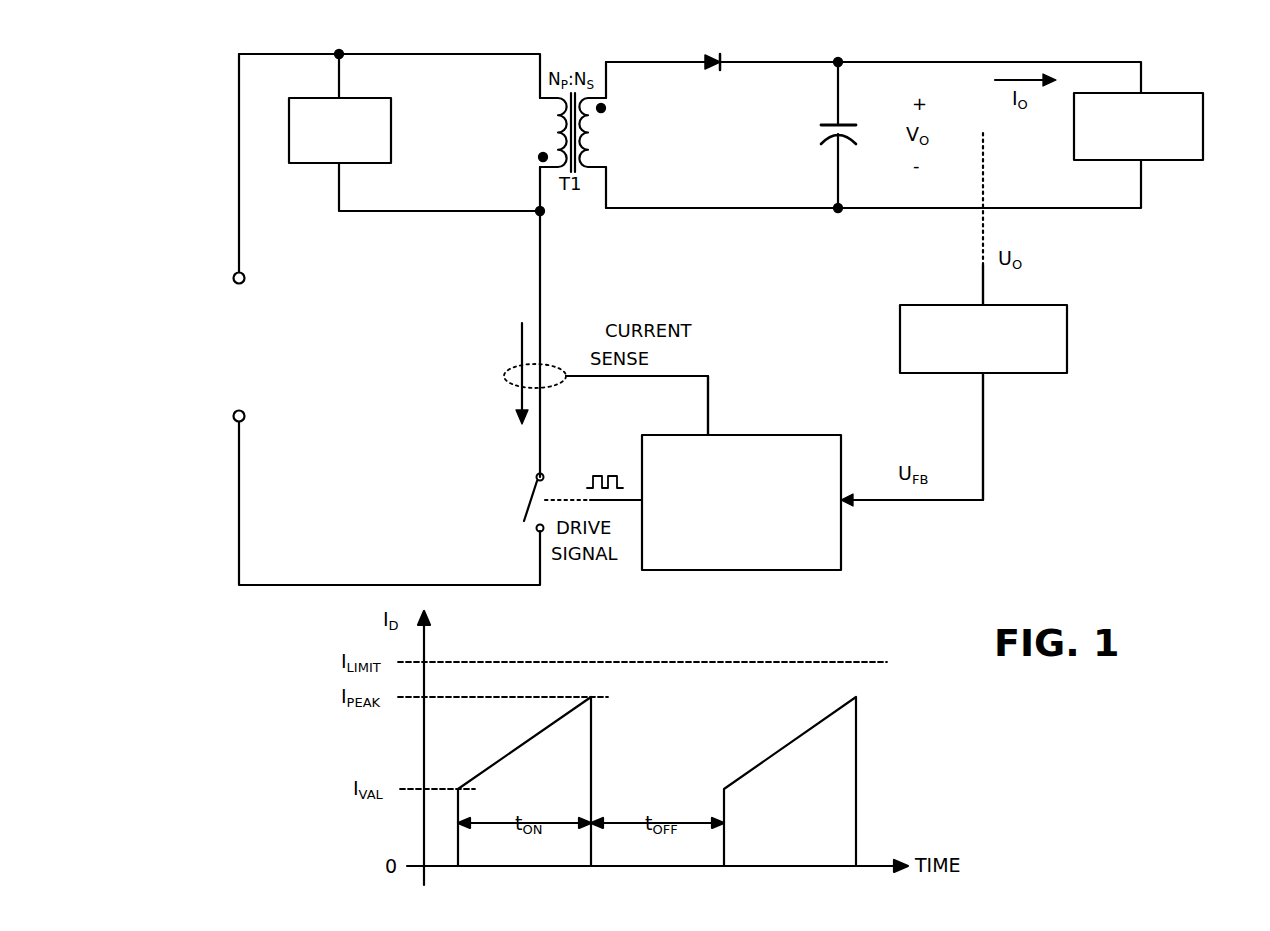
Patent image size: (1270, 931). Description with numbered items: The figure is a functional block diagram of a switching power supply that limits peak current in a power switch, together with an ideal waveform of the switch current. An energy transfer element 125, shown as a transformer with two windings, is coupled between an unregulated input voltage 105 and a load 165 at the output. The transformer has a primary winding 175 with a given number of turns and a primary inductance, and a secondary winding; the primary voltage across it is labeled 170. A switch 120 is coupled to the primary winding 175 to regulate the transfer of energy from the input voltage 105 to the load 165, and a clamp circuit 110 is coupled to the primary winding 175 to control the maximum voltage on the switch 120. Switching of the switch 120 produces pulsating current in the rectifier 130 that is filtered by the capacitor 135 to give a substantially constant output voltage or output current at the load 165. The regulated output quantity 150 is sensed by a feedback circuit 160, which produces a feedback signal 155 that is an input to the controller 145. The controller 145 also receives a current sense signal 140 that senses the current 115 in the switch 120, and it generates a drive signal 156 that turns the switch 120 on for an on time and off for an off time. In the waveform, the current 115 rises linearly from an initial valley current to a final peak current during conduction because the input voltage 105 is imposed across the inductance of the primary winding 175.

The unregulated input voltage 105 is at (211, 366).
The clamp circuit 110 is at (327, 172).
The current I_D 115 is at (505, 320).
The switch S1 120 is at (523, 481).
The energy transfer element T1 125 is at (573, 200).
The rectifier D1 130 is at (700, 70).
The capacitor C1 135 is at (828, 112).
The current sense signal 140 is at (705, 362).
The controller 145 is at (823, 427).
The output quantity U_O 150 is at (975, 272).
The feedback signal U_FB 155 is at (990, 452).
The drive signal 156 is at (605, 452).
The feedback circuit 160 is at (1075, 338).
The load 165 is at (1160, 82).
The primary voltage V_P 170 is at (455, 110).
The primary winding 175 is at (548, 122).